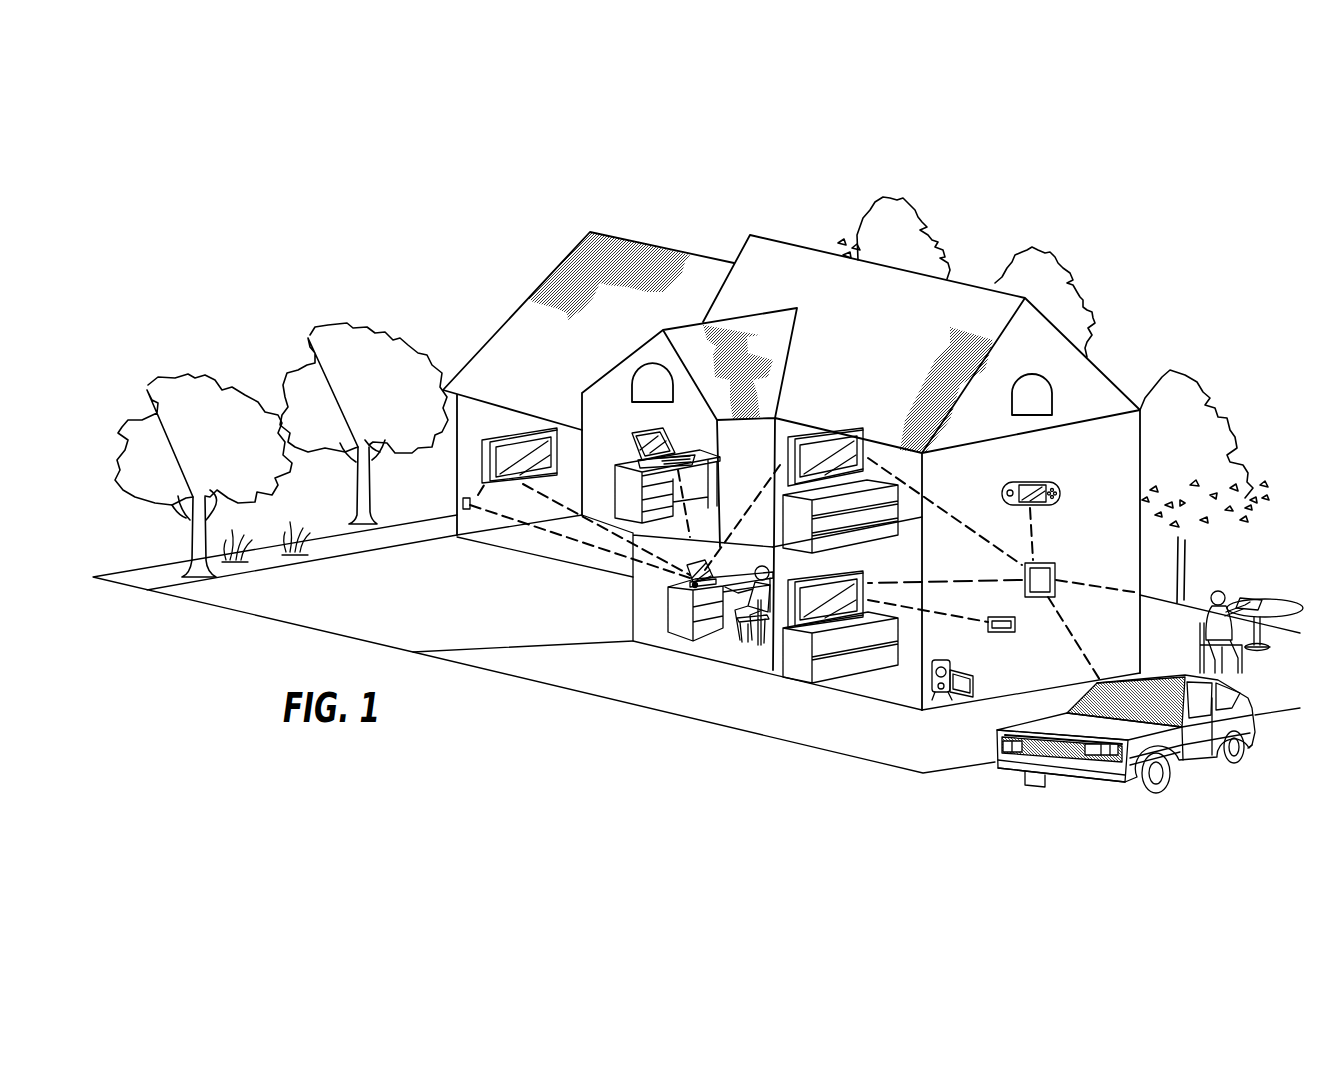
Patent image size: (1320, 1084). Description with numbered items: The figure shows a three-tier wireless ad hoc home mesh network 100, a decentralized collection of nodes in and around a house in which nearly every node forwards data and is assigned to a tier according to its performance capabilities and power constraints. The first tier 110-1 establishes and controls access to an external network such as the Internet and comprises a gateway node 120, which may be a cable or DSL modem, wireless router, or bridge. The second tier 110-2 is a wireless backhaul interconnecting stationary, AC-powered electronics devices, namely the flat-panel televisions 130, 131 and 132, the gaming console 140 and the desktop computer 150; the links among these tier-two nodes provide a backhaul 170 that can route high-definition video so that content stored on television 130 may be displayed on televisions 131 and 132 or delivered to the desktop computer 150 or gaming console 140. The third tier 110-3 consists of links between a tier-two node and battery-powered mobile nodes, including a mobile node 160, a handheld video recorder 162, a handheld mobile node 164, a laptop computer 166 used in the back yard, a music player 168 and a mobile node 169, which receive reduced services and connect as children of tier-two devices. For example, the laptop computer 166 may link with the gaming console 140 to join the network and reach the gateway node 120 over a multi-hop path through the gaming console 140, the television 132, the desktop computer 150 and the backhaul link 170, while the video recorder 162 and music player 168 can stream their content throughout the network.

The multi-tier wireless home mesh network 100 is at (1157, 268).
The first tier 110-1 is at (405, 533).
The second tier 110-2 is at (647, 592).
The third tier 110-3 is at (1013, 667).
The gateway node 120 is at (462, 504).
The flat-panel television 130 is at (507, 433).
The flat-panel television 131 is at (800, 433).
The flat-panel television 132 is at (790, 626).
The gaming console 140 is at (1043, 563).
The desktop computer 150 is at (697, 563).
The mobile node 160 is at (637, 457).
The handheld video recorder 162 is at (957, 700).
The mobile node 164 is at (1046, 483).
The laptop computer 166 is at (1248, 597).
The music player 168 is at (1117, 682).
The mobile node 169 is at (1003, 617).
The backhaul link 170 is at (558, 530).